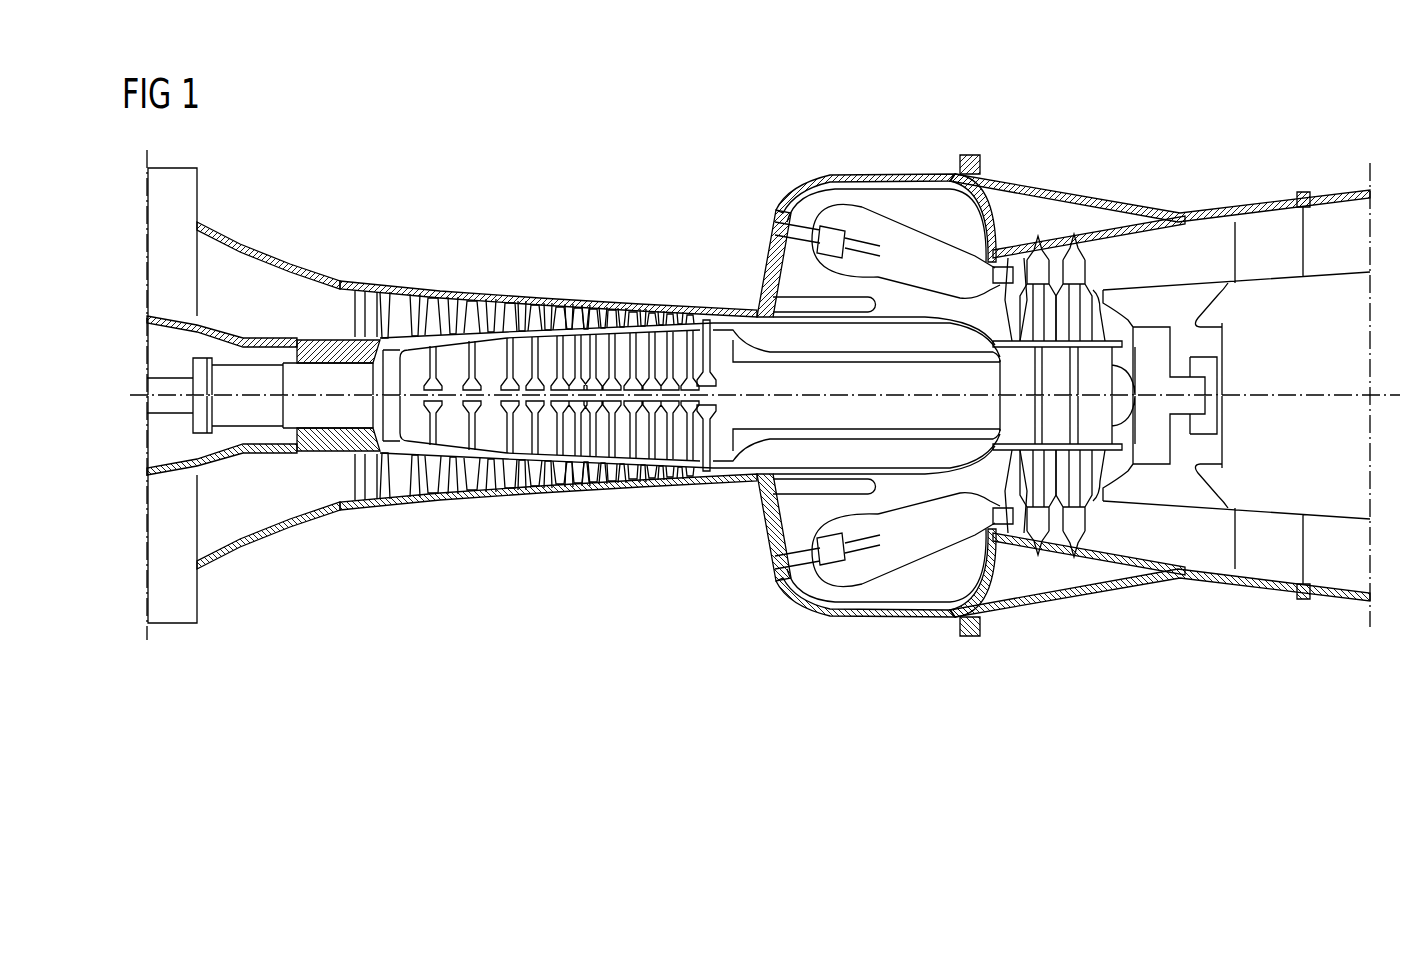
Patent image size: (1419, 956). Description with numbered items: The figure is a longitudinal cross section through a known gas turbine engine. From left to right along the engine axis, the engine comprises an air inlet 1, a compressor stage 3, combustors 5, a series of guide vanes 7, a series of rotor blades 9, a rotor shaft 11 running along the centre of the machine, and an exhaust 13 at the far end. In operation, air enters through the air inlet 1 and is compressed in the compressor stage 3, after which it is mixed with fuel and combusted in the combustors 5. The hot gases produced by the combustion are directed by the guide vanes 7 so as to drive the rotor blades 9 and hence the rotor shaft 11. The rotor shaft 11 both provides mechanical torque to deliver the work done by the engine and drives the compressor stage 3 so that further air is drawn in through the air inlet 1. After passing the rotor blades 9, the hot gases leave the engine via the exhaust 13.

The air inlet 1 is at (188, 204).
The compressor stage 3 is at (560, 280).
The combustors 5 is at (914, 244).
The guide vanes 7 is at (997, 277).
The rotor blades 9 is at (1040, 268).
The rotor shaft 11 is at (763, 417).
The exhaust 13 is at (1360, 254).